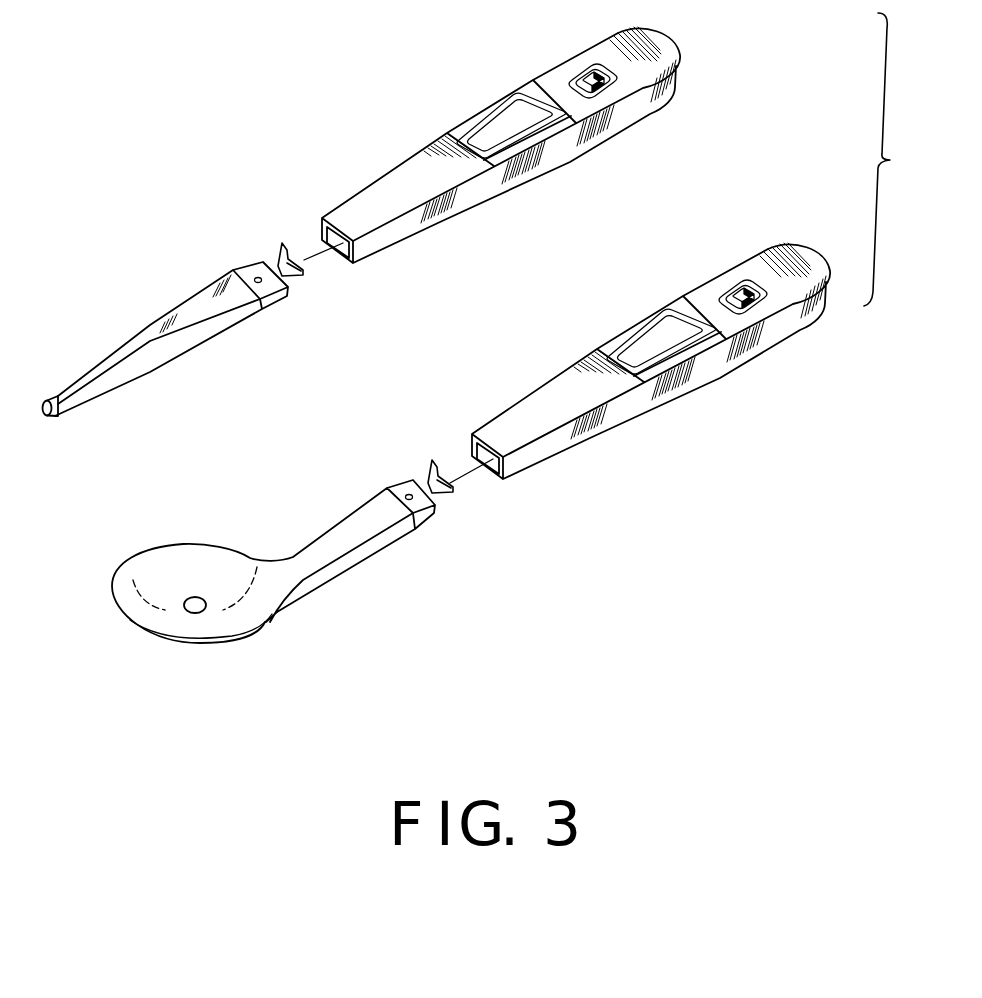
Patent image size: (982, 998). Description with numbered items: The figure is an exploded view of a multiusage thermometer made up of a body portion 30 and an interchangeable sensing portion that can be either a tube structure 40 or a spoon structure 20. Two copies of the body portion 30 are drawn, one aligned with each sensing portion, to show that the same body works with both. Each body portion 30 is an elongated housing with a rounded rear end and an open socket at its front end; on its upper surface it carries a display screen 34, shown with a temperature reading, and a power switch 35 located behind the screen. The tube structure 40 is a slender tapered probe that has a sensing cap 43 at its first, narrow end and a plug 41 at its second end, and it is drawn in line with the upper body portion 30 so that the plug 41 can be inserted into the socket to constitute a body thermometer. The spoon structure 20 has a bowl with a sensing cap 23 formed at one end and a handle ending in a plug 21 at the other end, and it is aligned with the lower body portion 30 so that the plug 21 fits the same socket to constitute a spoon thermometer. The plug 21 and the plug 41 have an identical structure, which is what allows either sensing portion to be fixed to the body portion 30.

The spoon structure 20 is at (282, 535).
The plug 21 is at (435, 477).
The sensing cap 23 is at (203, 597).
The body portion 30 is at (586, 163).
The display screen 34 is at (488, 133).
The power switch 35 is at (592, 77).
The tube structure 40 is at (173, 329).
The plug 41 is at (285, 263).
The sensing cap 43 is at (56, 411).